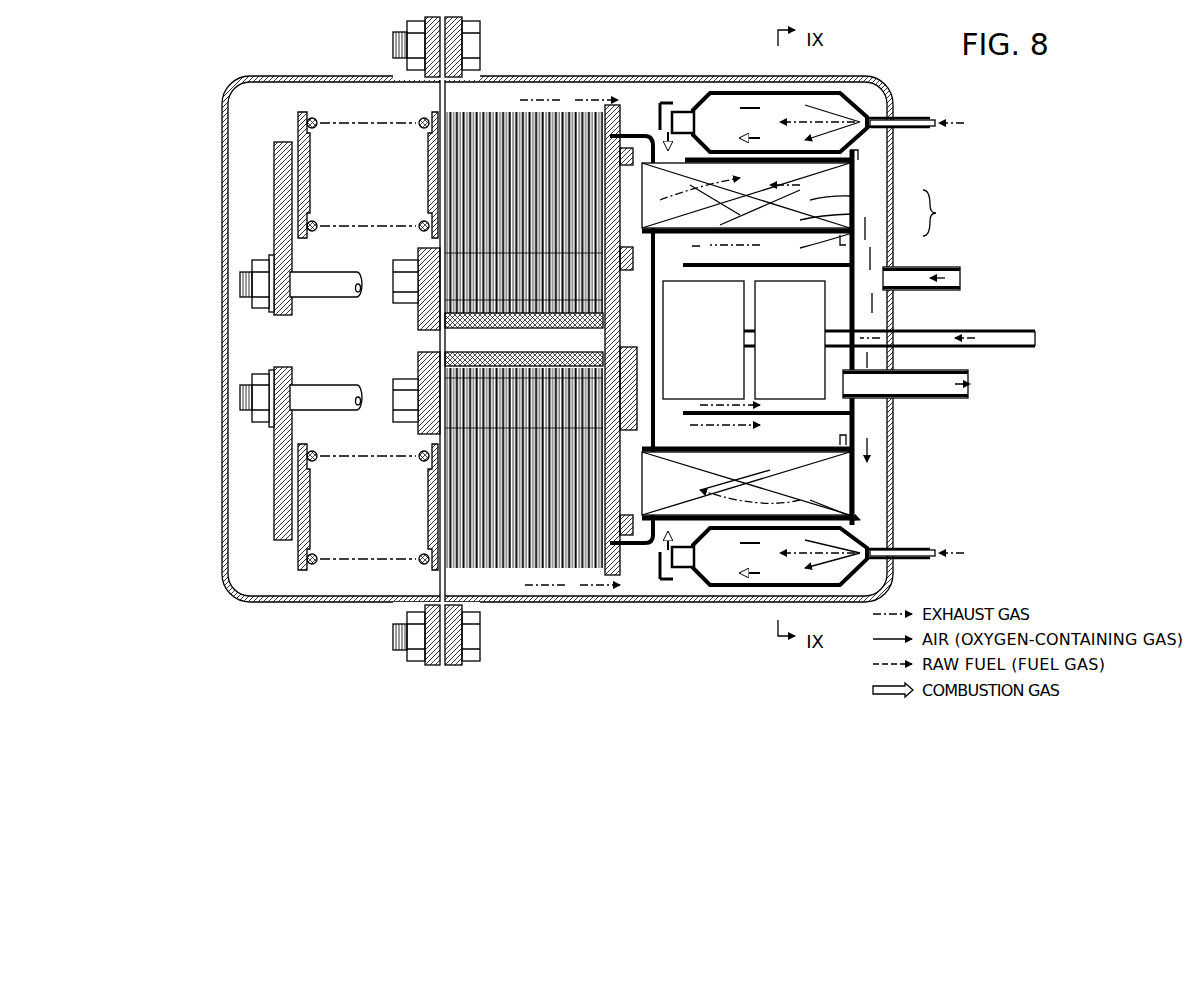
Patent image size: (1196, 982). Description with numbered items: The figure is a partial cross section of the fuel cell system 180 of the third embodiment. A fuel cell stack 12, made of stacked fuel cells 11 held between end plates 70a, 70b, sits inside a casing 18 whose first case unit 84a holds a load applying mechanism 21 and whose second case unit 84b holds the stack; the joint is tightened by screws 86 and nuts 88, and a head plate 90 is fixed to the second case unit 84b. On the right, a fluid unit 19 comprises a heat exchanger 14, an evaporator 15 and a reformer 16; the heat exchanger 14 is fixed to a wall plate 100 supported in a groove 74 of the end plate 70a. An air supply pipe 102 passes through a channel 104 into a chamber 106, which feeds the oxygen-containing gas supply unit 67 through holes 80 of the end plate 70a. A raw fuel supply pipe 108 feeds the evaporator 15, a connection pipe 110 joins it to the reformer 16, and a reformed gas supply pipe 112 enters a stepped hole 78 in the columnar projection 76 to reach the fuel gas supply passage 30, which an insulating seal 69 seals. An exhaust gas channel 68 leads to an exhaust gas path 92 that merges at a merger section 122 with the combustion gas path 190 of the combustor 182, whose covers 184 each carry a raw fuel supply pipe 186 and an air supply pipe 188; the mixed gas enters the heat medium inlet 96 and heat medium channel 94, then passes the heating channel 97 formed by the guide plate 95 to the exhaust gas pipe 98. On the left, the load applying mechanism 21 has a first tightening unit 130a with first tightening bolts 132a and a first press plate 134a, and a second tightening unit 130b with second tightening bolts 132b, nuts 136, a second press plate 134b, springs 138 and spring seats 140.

The fuel cell 11 is at (495, 570).
The fuel cell stack 12 is at (524, 331).
The heat exchanger 14 is at (852, 196).
The evaporator 15 is at (852, 233).
The reformer 16 is at (852, 214).
The casing 18 is at (362, 617).
The fluid unit 19 is at (940, 213).
The load applying mechanism 21 is at (326, 300).
The fuel gas supply passage 30 is at (425, 336).
The oxygen-containing gas supply unit 67 is at (640, 302).
The exhaust gas channel 68 is at (572, 106).
The insulating seal 69 is at (545, 340).
The end plate 70a is at (604, 580).
The end plate 70b is at (440, 583).
The groove 74 is at (647, 575).
The columnar projection 76 is at (660, 362).
The stepped hole 78 is at (605, 345).
The holes 80 is at (668, 272).
The first case unit 84a is at (310, 77).
The second case unit 84b is at (510, 77).
The screws 86 is at (472, 27).
The nuts 88 is at (406, 43).
The head plate 90 is at (893, 462).
The exhaust gas path 92 is at (612, 100).
The heat medium channel 94 is at (800, 122).
The guide plate 95 is at (801, 410).
The heat medium inlet 96 is at (746, 195).
The heating channel 97 is at (715, 400).
The exhaust gas pipe 98 is at (936, 399).
The wall plate 100 is at (665, 318).
The air supply pipe 102 is at (951, 266).
The channel 104 is at (852, 176).
The chamber 106 is at (746, 483).
The raw fuel supply pipe 108 is at (944, 328).
The connection pipe 110 is at (757, 325).
The reformed gas supply pipe 112 is at (660, 352).
The merger section 122 is at (695, 125).
The first tightening unit 130a is at (425, 356).
The second tightening unit 130b is at (294, 383).
The first tightening bolts 132a is at (393, 283).
The second tightening bolts 132b is at (240, 287).
The first press plate 134a is at (420, 330).
The second press plate 134b is at (274, 215).
The nuts 136 is at (265, 373).
The springs 138 is at (307, 565).
The spring seats 140 is at (430, 515).
The fuel cell system 180 is at (1010, 104).
The combustor 182 is at (878, 92).
The covers 184 is at (789, 91).
The raw fuel supply pipe 186 is at (927, 116).
The air supply pipe 188 is at (912, 131).
The combustion gas path 190 is at (693, 108).